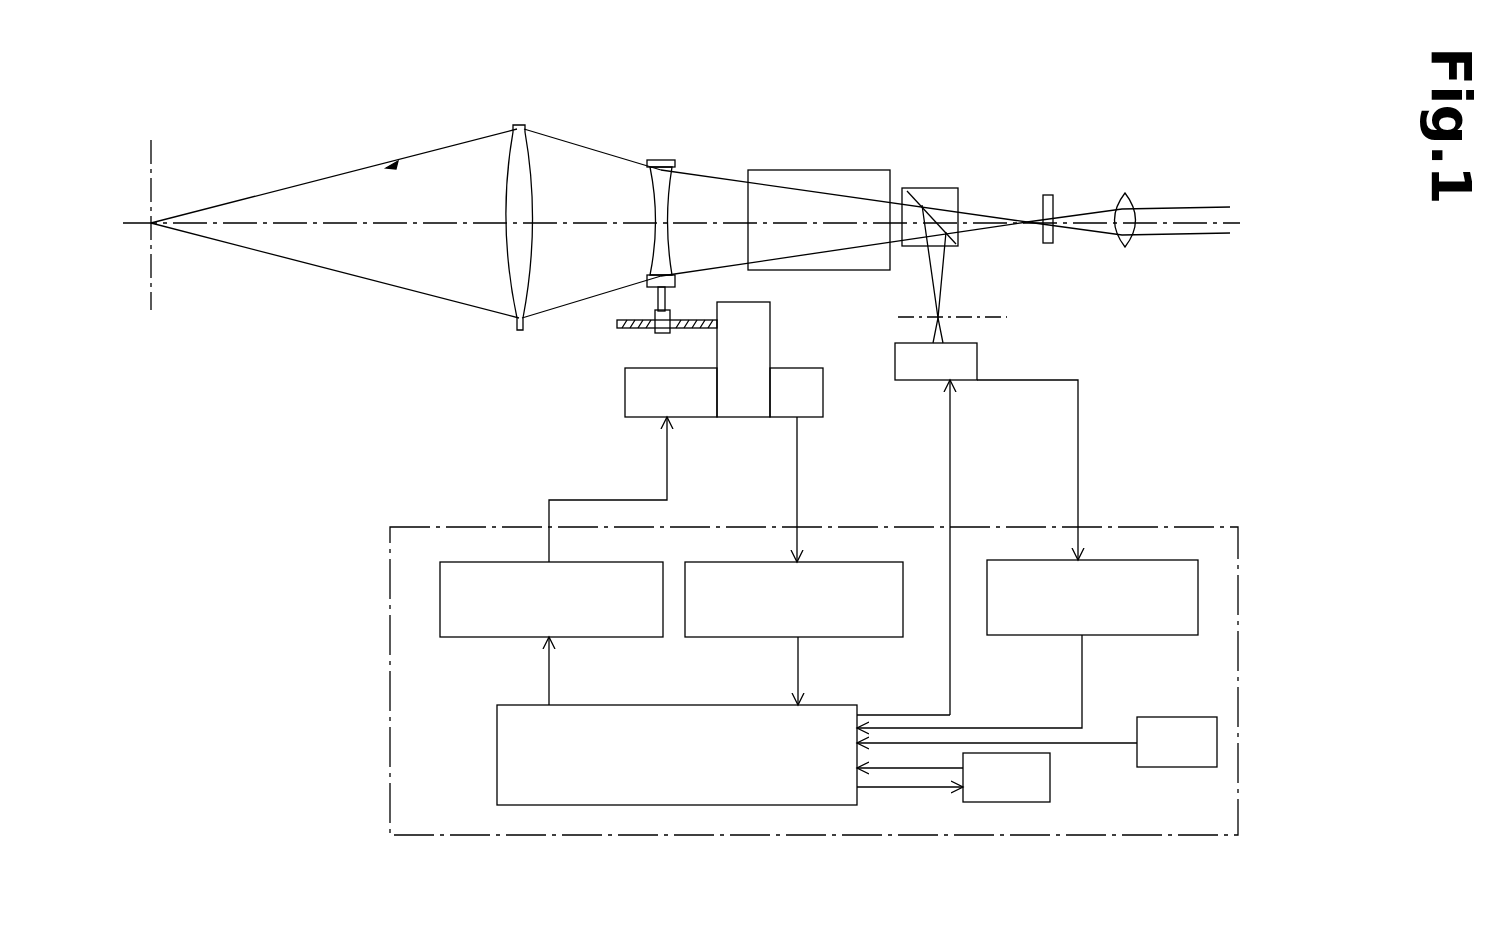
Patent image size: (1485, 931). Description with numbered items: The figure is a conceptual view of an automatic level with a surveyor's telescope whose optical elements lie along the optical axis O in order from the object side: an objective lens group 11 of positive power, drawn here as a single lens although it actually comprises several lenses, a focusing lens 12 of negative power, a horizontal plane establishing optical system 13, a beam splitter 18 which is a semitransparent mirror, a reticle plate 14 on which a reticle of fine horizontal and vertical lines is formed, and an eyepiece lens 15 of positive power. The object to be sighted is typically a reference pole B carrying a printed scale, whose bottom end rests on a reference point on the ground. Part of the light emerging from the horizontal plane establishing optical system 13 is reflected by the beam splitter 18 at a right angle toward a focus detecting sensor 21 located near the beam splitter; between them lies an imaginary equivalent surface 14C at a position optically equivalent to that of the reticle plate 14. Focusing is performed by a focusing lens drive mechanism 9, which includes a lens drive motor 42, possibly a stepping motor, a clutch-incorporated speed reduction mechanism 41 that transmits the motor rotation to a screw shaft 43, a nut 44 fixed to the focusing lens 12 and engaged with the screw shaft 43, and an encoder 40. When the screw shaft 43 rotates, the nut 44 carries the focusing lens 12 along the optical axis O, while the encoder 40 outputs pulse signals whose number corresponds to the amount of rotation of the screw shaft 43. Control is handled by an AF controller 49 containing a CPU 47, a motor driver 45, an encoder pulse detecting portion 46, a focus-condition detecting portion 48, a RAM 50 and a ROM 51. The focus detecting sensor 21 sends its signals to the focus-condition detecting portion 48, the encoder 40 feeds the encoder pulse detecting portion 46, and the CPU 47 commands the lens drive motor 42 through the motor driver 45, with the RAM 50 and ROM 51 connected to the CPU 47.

The reference pole B is at (152, 172).
The optical axis O is at (325, 223).
The objective lens group 11 is at (522, 124).
The focusing lens 12 is at (663, 160).
The horizontal plane establishing optical system 13 is at (818, 170).
The beam splitter 18 is at (935, 188).
The reticle plate 14 is at (1047, 195).
The imaginary equivalent surface 14C is at (984, 322).
The eyepiece lens 15 is at (1125, 193).
The focus detecting sensor 21 is at (917, 380).
The encoder 40 is at (813, 417).
The clutch-incorporated speed reduction mechanism 41 is at (742, 417).
The lens drive motor 42 is at (642, 416).
The screw shaft 43 is at (617, 325).
The nut 44 is at (660, 333).
The focusing lens drive mechanism 9 is at (650, 440).
The motor driver 45 is at (623, 637).
The encoder pulse detecting portion 46 is at (847, 637).
The CPU 47 is at (497, 760).
The focus-condition detecting portion 48 is at (1143, 635).
The AF controller 49 is at (1240, 665).
The RAM 50 is at (1052, 777).
The ROM 51 is at (1192, 767).